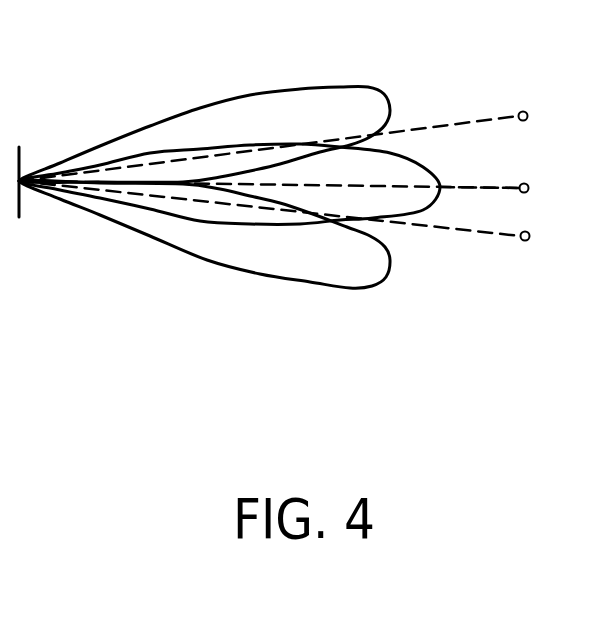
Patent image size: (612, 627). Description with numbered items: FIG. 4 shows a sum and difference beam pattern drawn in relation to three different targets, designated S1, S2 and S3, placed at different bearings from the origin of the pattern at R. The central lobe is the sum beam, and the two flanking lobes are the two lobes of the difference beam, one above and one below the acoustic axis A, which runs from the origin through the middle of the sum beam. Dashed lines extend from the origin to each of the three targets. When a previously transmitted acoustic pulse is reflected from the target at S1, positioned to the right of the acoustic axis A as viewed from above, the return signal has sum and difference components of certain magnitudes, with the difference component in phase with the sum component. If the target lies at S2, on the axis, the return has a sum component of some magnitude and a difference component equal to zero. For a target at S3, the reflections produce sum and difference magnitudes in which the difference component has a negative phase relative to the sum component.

The radar / receiver location R is at (20, 166).
The target S1 is at (291, 218).
The target S2 is at (290, 192).
The target S3 is at (290, 143).
The acoustic axis A is at (474, 188).